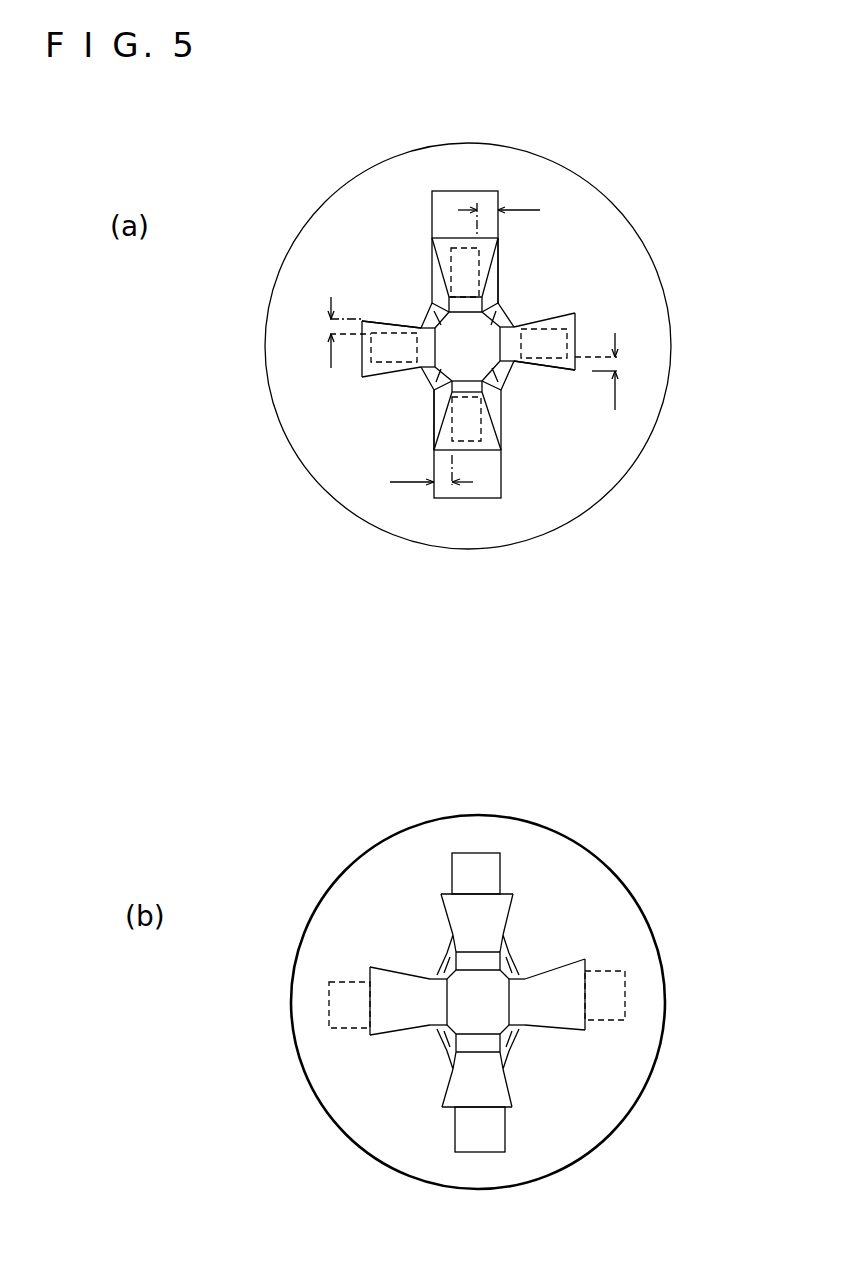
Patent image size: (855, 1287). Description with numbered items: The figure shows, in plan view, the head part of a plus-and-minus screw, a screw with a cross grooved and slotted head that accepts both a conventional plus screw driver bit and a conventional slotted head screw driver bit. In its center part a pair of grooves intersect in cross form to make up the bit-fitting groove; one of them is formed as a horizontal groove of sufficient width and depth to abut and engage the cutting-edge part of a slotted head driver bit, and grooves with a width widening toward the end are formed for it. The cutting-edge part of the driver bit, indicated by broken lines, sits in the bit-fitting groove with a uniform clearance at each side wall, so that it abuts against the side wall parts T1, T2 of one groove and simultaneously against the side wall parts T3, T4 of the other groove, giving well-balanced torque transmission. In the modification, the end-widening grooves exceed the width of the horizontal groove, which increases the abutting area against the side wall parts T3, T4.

The side wall part T1 is at (383, 321).
The side wall part T2 is at (548, 375).
The side wall part T3 is at (500, 262).
The side wall part T4 is at (434, 428).